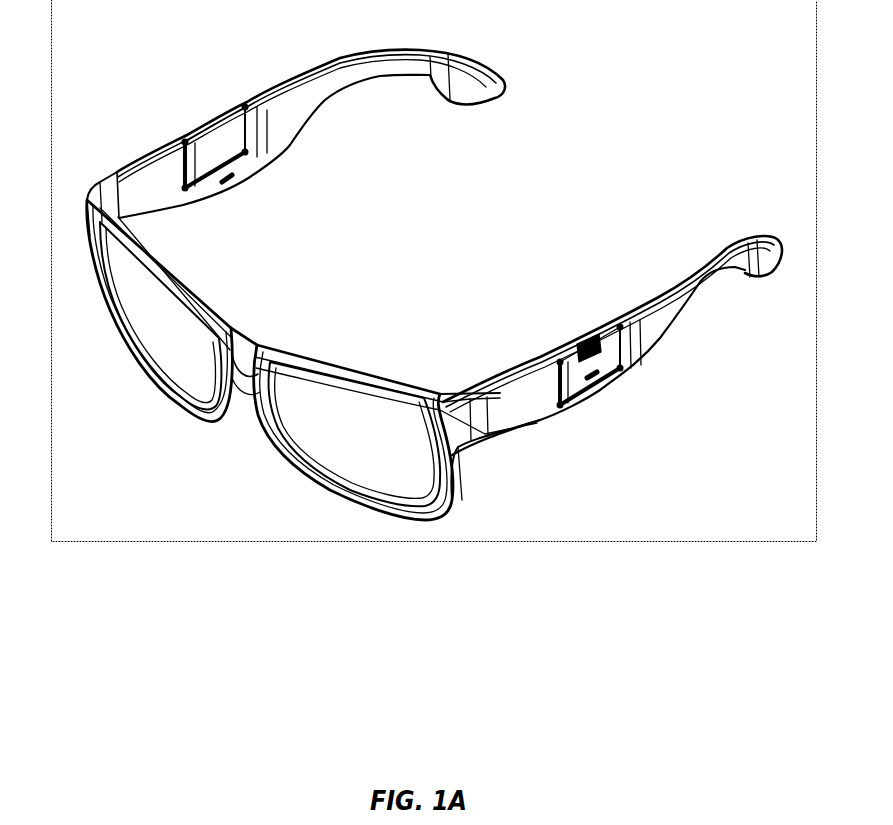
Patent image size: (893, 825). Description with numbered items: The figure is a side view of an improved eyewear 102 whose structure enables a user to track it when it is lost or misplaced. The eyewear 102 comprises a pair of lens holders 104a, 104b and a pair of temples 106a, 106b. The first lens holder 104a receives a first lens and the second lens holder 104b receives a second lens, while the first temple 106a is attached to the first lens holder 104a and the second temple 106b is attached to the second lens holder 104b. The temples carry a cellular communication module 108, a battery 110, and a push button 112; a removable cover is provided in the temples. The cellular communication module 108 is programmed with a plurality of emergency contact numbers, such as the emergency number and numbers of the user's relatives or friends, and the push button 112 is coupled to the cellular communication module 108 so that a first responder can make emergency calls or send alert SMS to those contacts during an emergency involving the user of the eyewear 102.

The eyewear 102 is at (120, 172).
The first lens holder 104a is at (287, 352).
The second lens holder 104b is at (178, 296).
The first temple 106a is at (687, 268).
The second temple 106b is at (338, 52).
The cellular communication module 108 is at (583, 333).
The battery 110 is at (221, 134).
The push button 112 is at (558, 372).